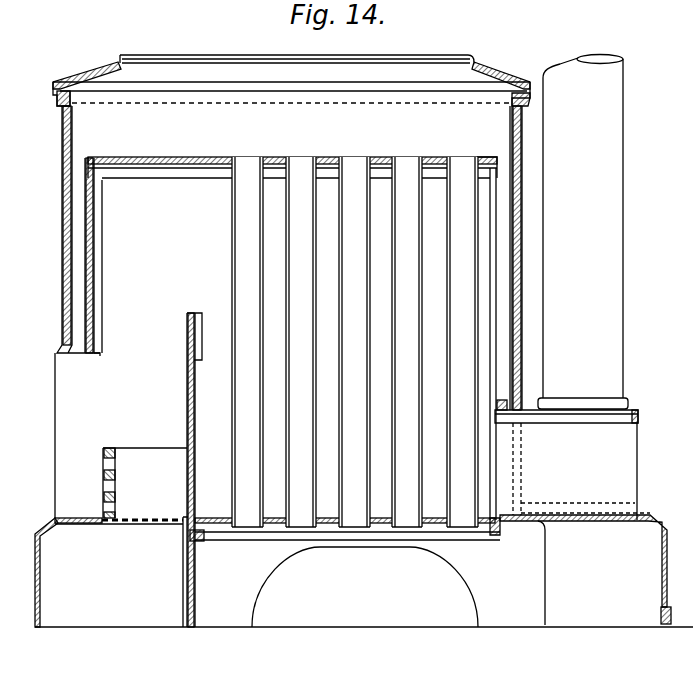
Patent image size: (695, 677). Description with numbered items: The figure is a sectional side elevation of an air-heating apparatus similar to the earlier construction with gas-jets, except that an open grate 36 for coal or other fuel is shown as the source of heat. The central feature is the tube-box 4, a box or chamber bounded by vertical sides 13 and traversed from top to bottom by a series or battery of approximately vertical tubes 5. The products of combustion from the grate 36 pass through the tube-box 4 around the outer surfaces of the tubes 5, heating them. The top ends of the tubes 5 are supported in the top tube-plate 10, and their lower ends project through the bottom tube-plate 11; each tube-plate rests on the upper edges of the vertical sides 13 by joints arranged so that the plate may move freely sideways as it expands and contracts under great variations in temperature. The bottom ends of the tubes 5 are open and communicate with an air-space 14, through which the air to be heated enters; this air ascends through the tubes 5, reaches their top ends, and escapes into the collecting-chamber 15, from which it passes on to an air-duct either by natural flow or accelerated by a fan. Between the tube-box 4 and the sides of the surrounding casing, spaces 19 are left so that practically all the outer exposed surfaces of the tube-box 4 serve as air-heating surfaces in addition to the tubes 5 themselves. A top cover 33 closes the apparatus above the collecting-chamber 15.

The tube-box 4 is at (327, 342).
The vertical tubes 5 is at (413, 342).
The top tube-plate 10 is at (433, 165).
The bottom tube-plate 11 is at (433, 525).
The vertical sides of tube-box 13 is at (497, 276).
The air-space 14 is at (364, 572).
The collecting-chamber 15 is at (291, 114).
The air-spaces between tube-box and casing 19 is at (503, 340).
The top cover 33 is at (292, 63).
The open grate 36 is at (152, 470).